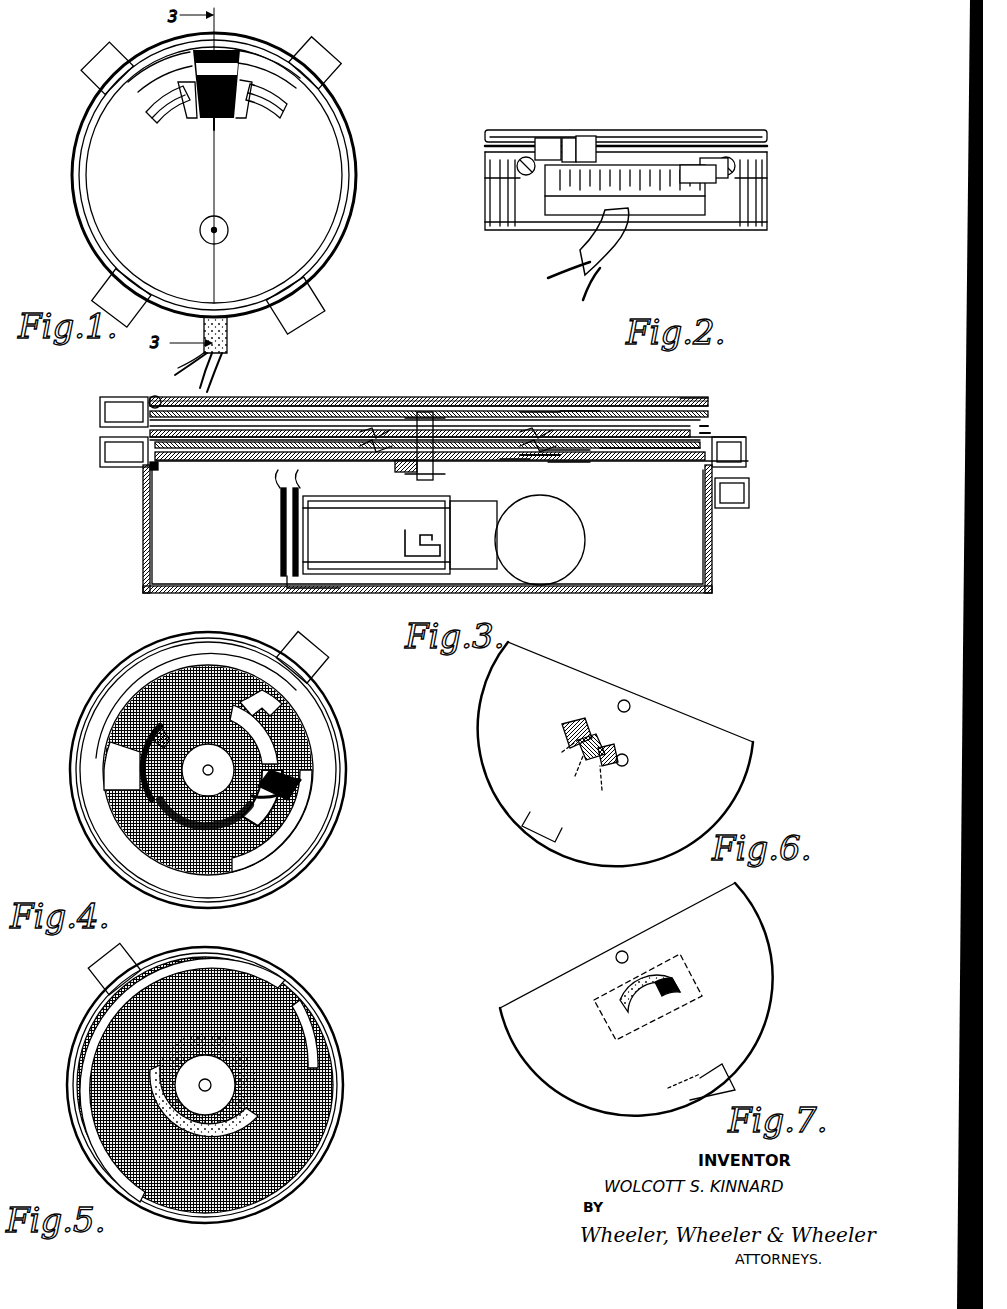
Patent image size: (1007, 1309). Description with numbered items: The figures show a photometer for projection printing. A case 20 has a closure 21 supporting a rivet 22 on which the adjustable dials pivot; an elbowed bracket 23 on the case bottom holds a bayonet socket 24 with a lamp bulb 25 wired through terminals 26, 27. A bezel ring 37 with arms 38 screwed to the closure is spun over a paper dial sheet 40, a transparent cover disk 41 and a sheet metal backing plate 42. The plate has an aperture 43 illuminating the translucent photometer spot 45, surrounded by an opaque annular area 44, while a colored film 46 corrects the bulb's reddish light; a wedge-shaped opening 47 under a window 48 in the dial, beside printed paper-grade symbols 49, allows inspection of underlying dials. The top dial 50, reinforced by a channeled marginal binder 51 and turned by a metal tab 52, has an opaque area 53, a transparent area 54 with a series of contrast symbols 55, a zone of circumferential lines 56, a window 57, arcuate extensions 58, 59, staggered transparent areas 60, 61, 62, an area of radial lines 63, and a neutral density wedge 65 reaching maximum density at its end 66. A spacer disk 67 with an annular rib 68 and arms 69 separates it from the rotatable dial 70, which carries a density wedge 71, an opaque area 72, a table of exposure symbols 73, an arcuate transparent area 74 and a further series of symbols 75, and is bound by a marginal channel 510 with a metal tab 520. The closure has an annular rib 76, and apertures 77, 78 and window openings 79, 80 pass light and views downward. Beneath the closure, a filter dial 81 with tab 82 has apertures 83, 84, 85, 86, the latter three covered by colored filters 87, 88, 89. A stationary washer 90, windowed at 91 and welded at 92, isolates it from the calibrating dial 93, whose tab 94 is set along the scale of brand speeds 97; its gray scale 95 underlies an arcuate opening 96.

In FIG. 2, the case 20 is at (755, 204).
In FIG. 3, the case 20 is at (142, 560).
In FIG. 2, the closure 21 is at (765, 173).
In FIG. 3, the closure 21 is at (150, 492).
In FIG. 3, the rivet 22 is at (425, 412).
In FIG. 3, the elbowed bracket 23 is at (283, 578).
In FIG. 3, the bayonet socket 24 is at (400, 535).
In FIG. 3, the lamp bulb 25 is at (520, 582).
In FIG. 3, the terminal 26 is at (270, 462).
In FIG. 3, the terminal 27 is at (300, 486).
In FIG. 1, the bezel ring 37 is at (358, 175).
In FIG. 2, the bezel ring 37 is at (496, 130).
In FIG. 3, the bezel ring 37 is at (708, 400).
In FIG. 2, the arms 38 is at (528, 140).
In FIG. 3, the paper dial sheet 40 is at (632, 400).
In FIG. 1, the transparent cover disk 41 is at (312, 230).
In FIG. 3, the transparent cover disk 41 is at (596, 400).
In FIG. 3, the sheet metal backing plate 42 is at (690, 400).
In FIG. 3, the aperture 43 is at (570, 410).
In FIG. 1, the annular area 44 is at (230, 232).
In FIG. 1, the photometer spot 45 is at (218, 228).
In FIG. 3, the colored film 46 is at (528, 410).
In FIG. 3, the wedge-shaped opening 47 is at (296, 412).
In FIG. 1, the window 48 is at (248, 52).
In FIG. 3, the window 48 is at (330, 418).
In FIG. 1, the printed symbols 49 is at (176, 92).
In FIG. 3, the top dial 50 is at (250, 424).
In FIG. 4, the top dial 50 is at (70, 758).
In FIG. 3, the channeled marginal binder 51 is at (710, 428).
In FIG. 4, the channeled marginal binder 51 is at (74, 772).
In FIG. 1, the metal tab 52 is at (296, 48).
In FIG. 3, the metal tab 52 is at (100, 412).
In FIG. 4, the metal tab 52 is at (295, 652).
In FIG. 4, the opaque area 53 is at (135, 840).
In FIG. 4, the transparent area 54 is at (98, 705).
In FIG. 1, the series of symbols 55 is at (200, 68).
In FIG. 4, the series of symbols 55 is at (162, 670).
In FIG. 4, the zone of circumferential lines 56 is at (308, 800).
In FIG. 4, the transparent area 57 is at (310, 752).
In FIG. 4, the arcuate extension 58 is at (198, 702).
In FIG. 4, the arcuate extension 59 is at (270, 752).
In FIG. 4, the transparent area 60 is at (295, 714).
In FIG. 4, the transparent area 61 is at (236, 712).
In FIG. 4, the transparent area 62 is at (208, 740).
In FIG. 4, the area of radial lines 63 is at (140, 780).
In FIG. 4, the neutral density wedge 65 is at (180, 826).
In FIG. 4, the end of density wedge 66 is at (312, 782).
In FIG. 2, the spacer disk 67 is at (485, 150).
In FIG. 3, the spacer disk 67 is at (372, 430).
In FIG. 3, the annular spacing rib 68 is at (378, 442).
In FIG. 2, the arms 69 is at (570, 142).
In FIG. 3, the rotatable dial 70 is at (200, 440).
In FIG. 5, the rotatable dial 70 is at (350, 1094).
In FIG. 5, the density wedge 71 is at (250, 1122).
In FIG. 5, the opaque area 72 is at (320, 1108).
In FIG. 1, the table of exposure symbols 73 is at (218, 120).
In FIG. 5, the table of exposure symbols 73 is at (262, 1085).
In FIG. 5, the arcuate transparent area 74 is at (300, 1034).
In FIG. 5, the series of symbols 75 is at (278, 980).
In FIG. 3, the annular rib 76 is at (360, 468).
In FIG. 3, the aperture 77 is at (522, 430).
In FIG. 3, the aperture 78 is at (538, 442).
In FIG. 3, the window opening 79 is at (178, 406).
In FIG. 3, the window opening 80 is at (216, 445).
In FIG. 3, the filter dial 81 is at (668, 462).
In FIG. 6, the filter dial 81 is at (722, 746).
In FIG. 1, the tab 82 is at (143, 308).
In FIG. 2, the tab 82 is at (570, 140).
In FIG. 3, the tab 82 is at (748, 452).
In FIG. 6, the tab 82 is at (548, 840).
In FIG. 6, the aperture 83 is at (630, 762).
In FIG. 6, the aperture 84 is at (607, 787).
In FIG. 3, the aperture 85 is at (528, 462).
In FIG. 6, the aperture 85 is at (570, 775).
In FIG. 6, the aperture 86 is at (556, 752).
In FIG. 6, the colored filter 87 is at (616, 750).
In FIG. 3, the colored filter 88 is at (536, 464).
In FIG. 6, the colored filter 88 is at (600, 740).
In FIG. 6, the colored filter 89 is at (585, 722).
In FIG. 3, the stationary washer 90 is at (638, 462).
In FIG. 3, the window 91 is at (242, 452).
In FIG. 3, the spot weld 92 is at (148, 470).
In FIG. 3, the calibrating dial 93 is at (618, 464).
In FIG. 7, the calibrating dial 93 is at (740, 956).
In FIG. 1, the tab 94 is at (290, 300).
In FIG. 2, the tab 94 is at (708, 190).
In FIG. 3, the tab 94 is at (750, 492).
In FIG. 7, the tab 94 is at (716, 1094).
In FIG. 3, the gray scale 95 is at (564, 466).
In FIG. 7, the gray scale 95 is at (670, 994).
In FIG. 7, the arcuate opening 96 is at (636, 1010).
In FIG. 2, the scale of brand speeds 97 is at (692, 215).
In FIG. 3, the scale of brand speeds 97 is at (552, 466).
In FIG. 3, the reinforcing marginal channel 510 is at (712, 440).
In FIG. 5, the reinforcing marginal channel 510 is at (306, 1010).
In FIG. 1, the metal tab 520 is at (133, 56).
In FIG. 3, the metal tab 520 is at (100, 452).
In FIG. 5, the metal tab 520 is at (92, 978).